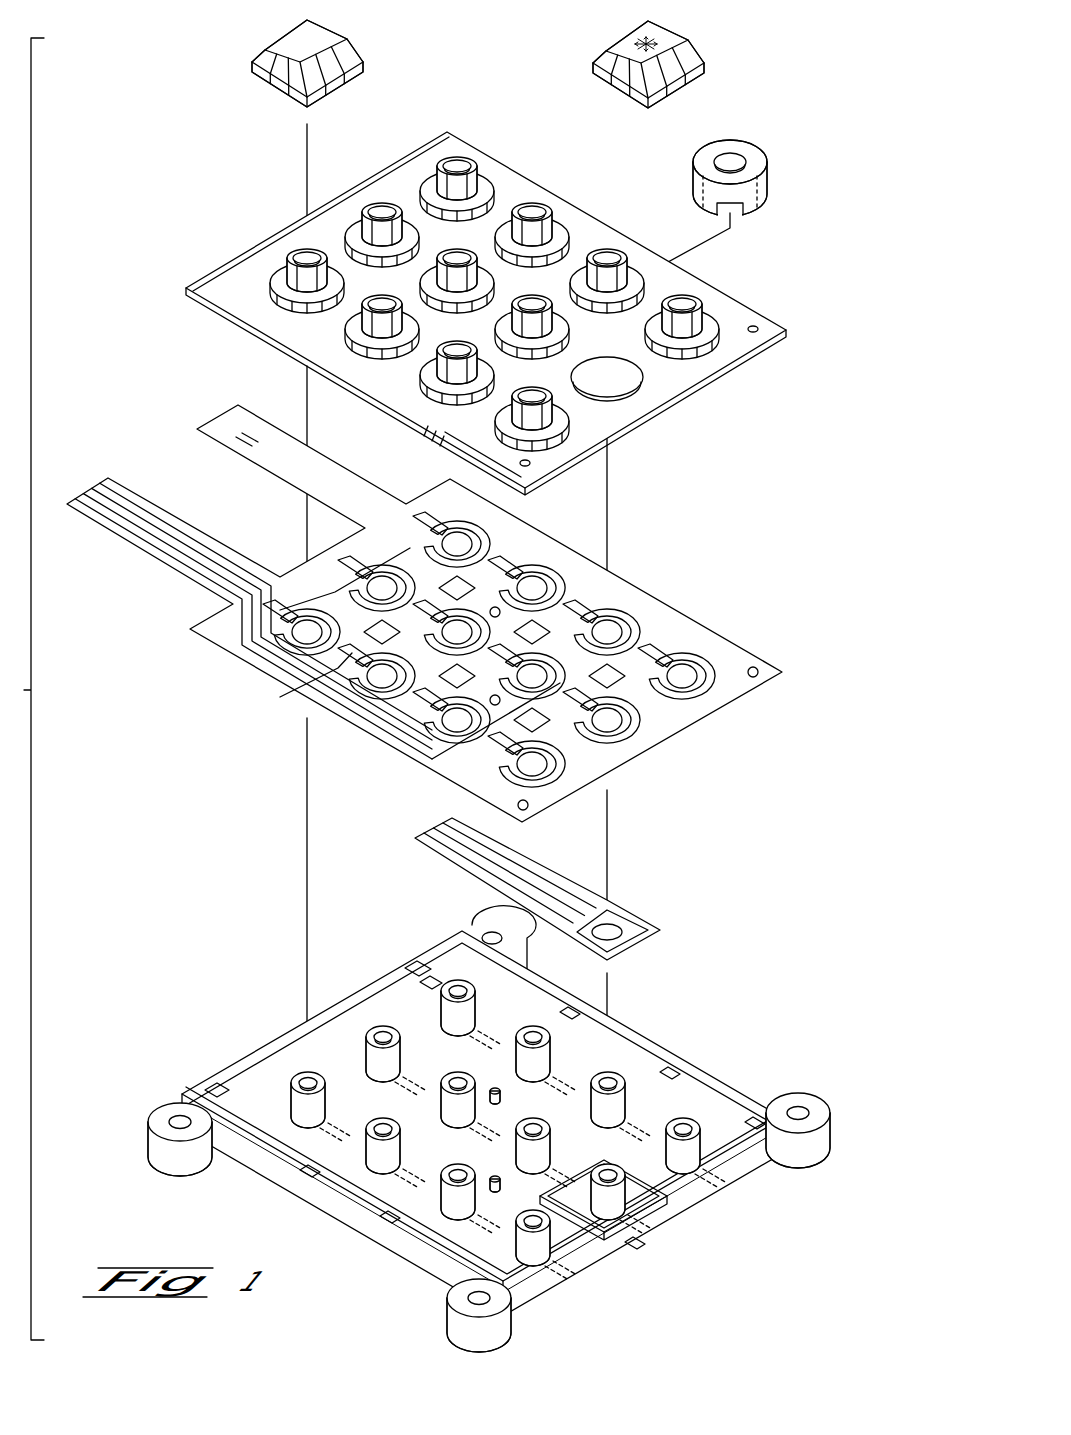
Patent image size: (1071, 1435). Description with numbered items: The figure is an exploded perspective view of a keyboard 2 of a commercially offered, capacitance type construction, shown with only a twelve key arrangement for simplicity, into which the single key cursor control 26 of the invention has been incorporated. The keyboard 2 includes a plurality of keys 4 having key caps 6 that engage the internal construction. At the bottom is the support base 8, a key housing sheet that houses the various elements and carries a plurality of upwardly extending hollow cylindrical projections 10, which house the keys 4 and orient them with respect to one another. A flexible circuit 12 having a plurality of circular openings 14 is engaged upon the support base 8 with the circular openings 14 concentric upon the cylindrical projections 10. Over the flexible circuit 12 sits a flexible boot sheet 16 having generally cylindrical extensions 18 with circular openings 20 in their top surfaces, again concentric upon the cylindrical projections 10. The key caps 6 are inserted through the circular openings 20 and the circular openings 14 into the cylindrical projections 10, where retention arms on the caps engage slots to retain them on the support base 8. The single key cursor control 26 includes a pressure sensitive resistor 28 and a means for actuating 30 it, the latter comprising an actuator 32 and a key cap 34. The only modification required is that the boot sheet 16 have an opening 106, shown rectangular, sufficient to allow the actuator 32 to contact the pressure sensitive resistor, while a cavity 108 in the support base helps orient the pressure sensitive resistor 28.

The keyboard 2 is at (478, 95).
The keys 4 is at (328, 34).
The key caps 6 is at (354, 50).
The support base 8 is at (489, 1129).
The hollow cylindrical projections 10 is at (509, 1147).
The flexible circuit 12 is at (424, 613).
The circular openings 14 is at (685, 683).
The flexible boot sheet 16 is at (500, 318).
The cylindrical extensions 18 is at (698, 335).
The circular openings 20 is at (548, 371).
The single key cursor control 26 is at (683, 30).
The pressure sensitive resistor 28 is at (633, 914).
The means for actuating 30 is at (617, 37).
The actuator 32 is at (706, 190).
The key cap 34 is at (700, 44).
The opening 106 is at (620, 387).
The cavity 108 is at (612, 1228).